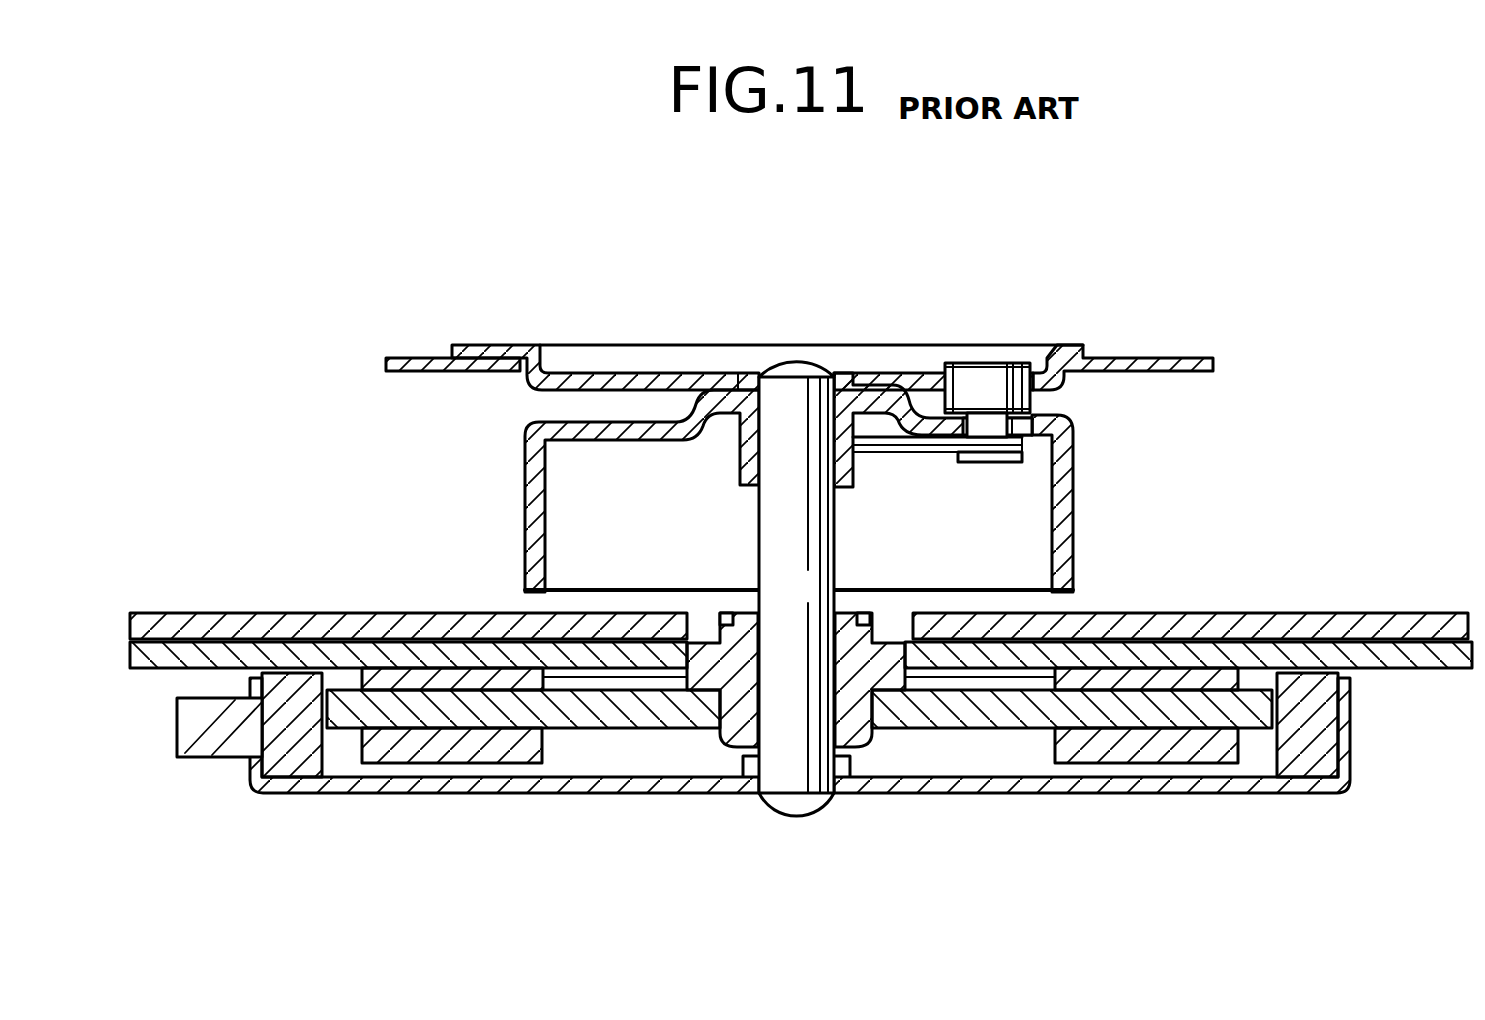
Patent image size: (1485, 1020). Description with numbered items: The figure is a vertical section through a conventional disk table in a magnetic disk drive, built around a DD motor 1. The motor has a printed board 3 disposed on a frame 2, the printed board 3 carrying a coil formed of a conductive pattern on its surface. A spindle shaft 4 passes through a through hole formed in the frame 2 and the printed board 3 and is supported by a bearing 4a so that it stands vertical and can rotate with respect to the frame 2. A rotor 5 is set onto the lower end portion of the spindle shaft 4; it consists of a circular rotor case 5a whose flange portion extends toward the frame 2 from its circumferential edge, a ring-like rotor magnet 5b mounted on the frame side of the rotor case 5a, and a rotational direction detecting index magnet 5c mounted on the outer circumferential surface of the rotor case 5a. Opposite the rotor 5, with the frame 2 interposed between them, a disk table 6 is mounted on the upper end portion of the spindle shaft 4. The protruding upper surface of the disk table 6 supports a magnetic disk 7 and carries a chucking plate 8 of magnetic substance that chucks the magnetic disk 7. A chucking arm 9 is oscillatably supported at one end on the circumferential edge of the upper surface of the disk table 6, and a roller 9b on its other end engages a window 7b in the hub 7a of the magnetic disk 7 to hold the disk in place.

The DD motor 1 is at (343, 444).
The frame 2 is at (197, 613).
The printed board 3 is at (403, 652).
The spindle shaft 4 is at (836, 525).
The bearing 4a is at (745, 612).
The rotor 5 is at (606, 794).
The rotor case 5a is at (1006, 794).
The rotor magnet 5b is at (290, 778).
The rotational direction detecting index magnet 5c is at (203, 742).
The disk table 6 is at (523, 463).
The magnetic disk 7 is at (1165, 357).
The hub 7a is at (600, 372).
The window 7b is at (928, 372).
The chucking plate 8 is at (727, 380).
The chucking arm 9 is at (873, 433).
The roller 9b is at (1015, 380).